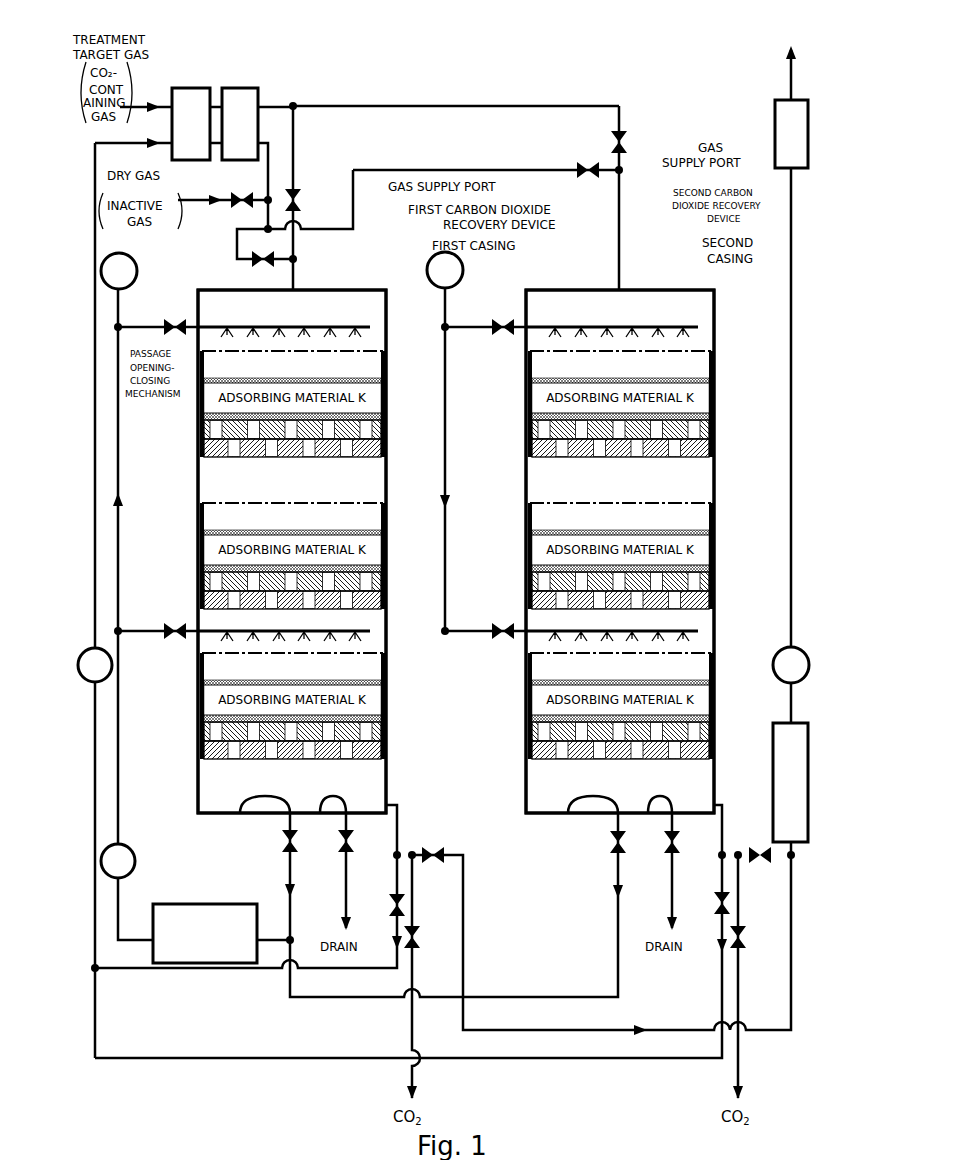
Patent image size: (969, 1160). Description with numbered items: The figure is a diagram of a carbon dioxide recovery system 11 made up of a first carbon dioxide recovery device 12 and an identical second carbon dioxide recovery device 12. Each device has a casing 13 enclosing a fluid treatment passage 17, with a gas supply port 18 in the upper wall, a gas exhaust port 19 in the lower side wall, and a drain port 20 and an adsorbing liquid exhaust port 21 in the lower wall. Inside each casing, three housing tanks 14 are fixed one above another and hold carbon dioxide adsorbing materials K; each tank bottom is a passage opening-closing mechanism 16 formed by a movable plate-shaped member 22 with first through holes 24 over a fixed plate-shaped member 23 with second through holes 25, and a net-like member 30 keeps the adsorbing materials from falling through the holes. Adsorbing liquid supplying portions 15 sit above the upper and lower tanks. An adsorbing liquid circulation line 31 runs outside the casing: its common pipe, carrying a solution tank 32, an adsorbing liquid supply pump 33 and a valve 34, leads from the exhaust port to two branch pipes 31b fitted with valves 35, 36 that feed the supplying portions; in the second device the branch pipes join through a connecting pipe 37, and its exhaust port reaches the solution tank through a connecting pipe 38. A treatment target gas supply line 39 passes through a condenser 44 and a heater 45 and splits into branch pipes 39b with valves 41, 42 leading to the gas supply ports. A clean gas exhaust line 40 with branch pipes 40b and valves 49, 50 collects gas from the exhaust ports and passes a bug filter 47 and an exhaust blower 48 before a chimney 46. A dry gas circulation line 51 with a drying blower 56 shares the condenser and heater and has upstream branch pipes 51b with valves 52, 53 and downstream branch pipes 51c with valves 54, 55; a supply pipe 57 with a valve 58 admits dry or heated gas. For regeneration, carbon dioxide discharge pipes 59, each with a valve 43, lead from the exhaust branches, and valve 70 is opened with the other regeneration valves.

The carbon dioxide recovery system 11 is at (336, 49).
The carbon dioxide recovery device 12 is at (362, 282).
The casing 13 is at (380, 288).
The housing tank 14 is at (394, 368).
The adsorbing liquid supplying portion 15 is at (372, 329).
The passage opening-closing mechanism 16 is at (130, 444).
The fluid treatment passage 17 is at (378, 307).
The gas supply port 18 is at (297, 289).
The gas exhaust port 19 is at (398, 803).
The drain port 20 is at (320, 830).
The adsorbing liquid exhaust port 21 is at (240, 832).
The movable plate-shaped member 22 is at (199, 428).
The fixed plate-shaped member 23 is at (199, 447).
The first through holes 24 is at (259, 458).
The second through holes 25 is at (276, 458).
The net-like member 30 is at (388, 410).
The adsorbing liquid circulation line 31 is at (121, 918).
The branch pipe 31b is at (151, 326).
The solution tank 32 is at (193, 903).
The adsorbing liquid supply pump 33 is at (131, 850).
The valve 34 is at (280, 841).
The valve 35 is at (177, 318).
The valve 36 is at (176, 641).
The connecting pipe 37 is at (461, 281).
The connecting pipe 38 is at (617, 949).
The treatment target gas supply line 39 is at (128, 106).
The branch pipe 39b is at (458, 105).
The clean gas exhaust line 40 is at (793, 346).
The branch pipe 40b is at (771, 863).
The valve 41 is at (303, 202).
The valve 42 is at (629, 143).
The valve 43 is at (355, 841).
The condenser 44 is at (192, 87).
The heater 45 is at (241, 87).
The chimney 46 is at (796, 98).
The bug filter 47 is at (804, 721).
The exhaust blower 48 is at (796, 647).
The valve 49 is at (433, 846).
The valve 50 is at (761, 848).
The dry gas circulation line 51 is at (97, 950).
The upstream branch pipe 51b is at (558, 169).
The downstream branch pipe 51c is at (215, 970).
The valve 52 is at (250, 261).
The valve 53 is at (588, 161).
The valve 54 is at (389, 905).
The valve 55 is at (714, 903).
The drying blower 56 is at (90, 650).
The supply pipe 57 is at (190, 200).
The valve 58 is at (240, 209).
The carbon dioxide discharge pipe 59 is at (414, 972).
The valve 70 is at (420, 934).